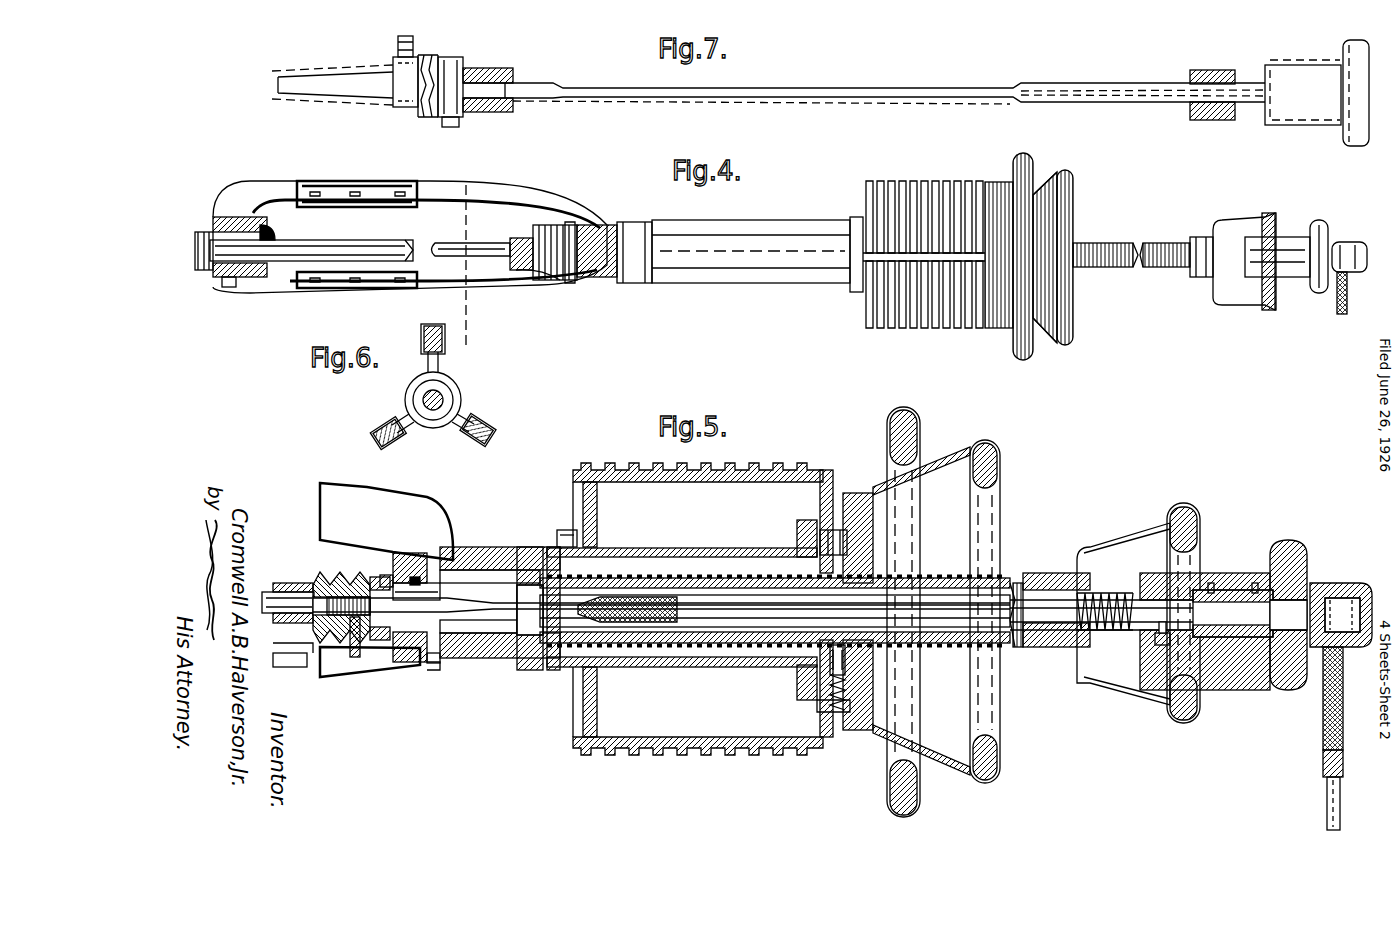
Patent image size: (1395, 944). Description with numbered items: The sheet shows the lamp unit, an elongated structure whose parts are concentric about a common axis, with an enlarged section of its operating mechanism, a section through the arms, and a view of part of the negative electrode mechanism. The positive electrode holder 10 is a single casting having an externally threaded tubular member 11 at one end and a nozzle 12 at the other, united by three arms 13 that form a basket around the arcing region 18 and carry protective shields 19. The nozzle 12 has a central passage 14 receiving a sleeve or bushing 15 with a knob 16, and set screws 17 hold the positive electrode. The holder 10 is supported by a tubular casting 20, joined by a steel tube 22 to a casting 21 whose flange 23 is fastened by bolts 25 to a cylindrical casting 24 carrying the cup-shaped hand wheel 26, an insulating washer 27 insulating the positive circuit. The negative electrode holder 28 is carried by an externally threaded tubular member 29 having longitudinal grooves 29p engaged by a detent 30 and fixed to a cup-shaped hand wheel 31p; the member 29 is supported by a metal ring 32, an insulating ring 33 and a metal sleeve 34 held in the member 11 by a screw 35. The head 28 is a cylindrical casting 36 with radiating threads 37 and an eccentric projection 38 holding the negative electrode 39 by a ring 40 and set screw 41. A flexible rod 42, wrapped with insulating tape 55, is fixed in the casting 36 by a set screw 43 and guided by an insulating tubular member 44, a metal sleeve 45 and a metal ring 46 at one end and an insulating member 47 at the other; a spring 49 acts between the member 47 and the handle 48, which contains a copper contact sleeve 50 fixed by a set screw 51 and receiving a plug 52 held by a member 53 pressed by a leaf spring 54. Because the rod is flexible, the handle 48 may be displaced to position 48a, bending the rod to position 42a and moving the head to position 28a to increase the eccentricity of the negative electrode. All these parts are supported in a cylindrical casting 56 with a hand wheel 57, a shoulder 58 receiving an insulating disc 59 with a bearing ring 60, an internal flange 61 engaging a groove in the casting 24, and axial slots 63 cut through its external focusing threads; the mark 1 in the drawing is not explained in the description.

In FIG. 4, the handle assembly 1 is at (599, 301).
In FIG. 4, the positive electrode holder 10 is at (426, 223).
In FIG. 4, the tubular member 11 is at (600, 226).
In FIG. 5, the tubular member 11 is at (460, 547).
In FIG. 4, the nozzle 12 is at (262, 232).
In FIG. 4, the arms 13 is at (548, 198).
In FIG. 6, the arms 13 is at (441, 358).
In FIG. 5, the arms 13 is at (410, 496).
In FIG. 4, the central passage 14 is at (280, 244).
In FIG. 4, the sleeve or bushing 15 is at (230, 215).
In FIG. 4, the knob 16 is at (198, 232).
In FIG. 4, the set screws 17 is at (226, 287).
In FIG. 4, the arcing region 18 is at (463, 233).
In FIG. 4, the protective shields 19 is at (348, 181).
In FIG. 6, the protective shields 19 is at (421, 330).
In FIG. 4, the tubular casting 20 is at (635, 283).
In FIG. 5, the tubular casting 20 is at (525, 547).
In FIG. 5, the casting 21 is at (675, 667).
In FIG. 4, the steel tube 22 is at (738, 283).
In FIG. 5, the steel tube 22 is at (670, 548).
In FIG. 5, the flange 23 is at (797, 683).
In FIG. 5, the cylindrical casting 24 is at (817, 708).
In FIG. 5, the bolts 25 is at (797, 535).
In FIG. 4, the cup-shaped hand wheel 26 is at (1073, 201).
In FIG. 5, the cup-shaped hand wheel 26 is at (1000, 515).
In FIG. 5, the insulating washer 27 is at (812, 520).
In FIG. 4, the negative electrode holder 28 is at (519, 239).
In FIG. 5, the negative electrode holder 28 is at (325, 572).
In FIG. 7, the displaced position of negative electrode head 28a is at (395, 57).
In FIG. 5, the tubular member 29 is at (966, 572).
In FIG. 5, the longitudinal grooves 29p is at (925, 645).
In FIG. 5, the detent 30 is at (848, 655).
In FIG. 4, the cup-shaped hand wheel 31p is at (1238, 222).
In FIG. 5, the cup-shaped hand wheel 31p is at (848, 688).
In FIG. 5, the metal ring 32 is at (490, 595).
In FIG. 5, the insulating ring 33 is at (415, 553).
In FIG. 5, the metal sleeve 34 is at (437, 585).
In FIG. 5, the screw 35 is at (433, 663).
In FIG. 4, the cylindrical casting 36 is at (572, 236).
In FIG. 5, the cylindrical casting 36 is at (378, 577).
In FIG. 4, the threads 37 is at (548, 230).
In FIG. 5, the threads 37 is at (345, 572).
In FIG. 4, the projection 38 is at (525, 272).
In FIG. 5, the projection 38 is at (281, 583).
In FIG. 4, the negative electrode 39 is at (482, 250).
In FIG. 5, the negative electrode 39 is at (290, 592).
In FIG. 5, the ring 40 is at (325, 670).
In FIG. 5, the set screw 41 is at (298, 667).
In FIG. 7, the flexible rod 42 is at (830, 88).
In FIG. 5, the flexible rod 42 is at (810, 612).
In FIG. 7, the bent position of rod 42a is at (746, 104).
In FIG. 5, the set screw 43 is at (355, 657).
In FIG. 7, the tubular member of insulating material 44 is at (500, 75).
In FIG. 5, the tubular member of insulating material 44 is at (388, 575).
In FIG. 5, the metal sleeve 45 is at (412, 577).
In FIG. 5, the metal ring 46 is at (445, 655).
In FIG. 7, the insulating member 47 is at (1214, 120).
In FIG. 5, the insulating member 47 is at (1090, 585).
In FIG. 7, the handle 48 is at (1356, 141).
In FIG. 4, the handle 48 is at (1318, 220).
In FIG. 5, the handle 48 is at (1288, 540).
In FIG. 7, the displaced position of handle 48a is at (1290, 65).
In FIG. 5, the spring 49 is at (1110, 630).
In FIG. 5, the copper contact sleeve 50 is at (1205, 650).
In FIG. 5, the set screw 51 is at (1160, 645).
In FIG. 4, the plug 52 is at (1350, 242).
In FIG. 5, the plug 52 is at (1355, 583).
In FIG. 5, the member 53 is at (1238, 590).
In FIG. 5, the leaf spring 54 is at (1215, 583).
In FIG. 5, the insulating tape 55 is at (680, 608).
In FIG. 4, the cylindrical casting 56 is at (925, 185).
In FIG. 5, the cylindrical casting 56 is at (725, 482).
In FIG. 4, the hand wheel 57 is at (1030, 355).
In FIG. 5, the hand wheel 57 is at (920, 448).
In FIG. 5, the shoulder 58 is at (600, 470).
In FIG. 5, the insulating ring or disc 59 is at (583, 505).
In FIG. 5, the metal ring 60 is at (598, 545).
In FIG. 5, the internal flange 61 is at (865, 500).
In FIG. 4, the slots 63 is at (857, 240).